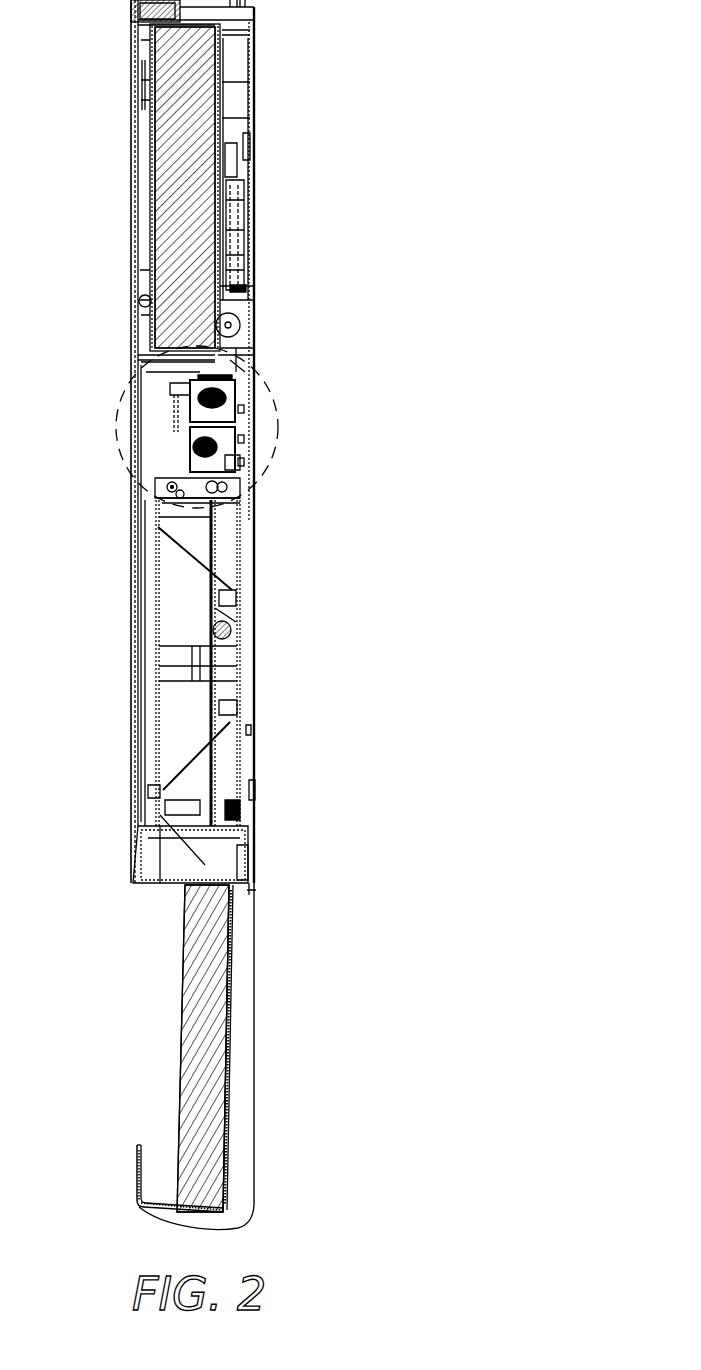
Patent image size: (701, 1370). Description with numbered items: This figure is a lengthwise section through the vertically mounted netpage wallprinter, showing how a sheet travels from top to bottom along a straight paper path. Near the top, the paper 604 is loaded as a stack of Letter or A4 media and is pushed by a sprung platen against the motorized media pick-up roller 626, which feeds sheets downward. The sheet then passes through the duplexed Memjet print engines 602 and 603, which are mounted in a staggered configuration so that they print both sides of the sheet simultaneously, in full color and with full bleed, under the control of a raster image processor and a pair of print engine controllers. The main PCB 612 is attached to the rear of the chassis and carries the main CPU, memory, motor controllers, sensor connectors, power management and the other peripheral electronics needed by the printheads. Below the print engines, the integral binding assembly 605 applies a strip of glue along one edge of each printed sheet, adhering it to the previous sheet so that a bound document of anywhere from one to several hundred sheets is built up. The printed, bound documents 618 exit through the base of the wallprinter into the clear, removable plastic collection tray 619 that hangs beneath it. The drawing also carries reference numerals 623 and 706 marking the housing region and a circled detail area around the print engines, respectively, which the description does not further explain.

The print engine 602 is at (243, 388).
The print engine 603 is at (243, 433).
The paper 604 is at (172, 163).
The binding assembly 605 is at (173, 596).
The main PCB 612 is at (240, 188).
The printed, bound documents 618 is at (192, 1097).
The collection tray 619 is at (247, 948).
The housing 623 is at (254, 140).
The media pick-up roller 626 is at (236, 322).
The print head assembly 706 is at (122, 400).